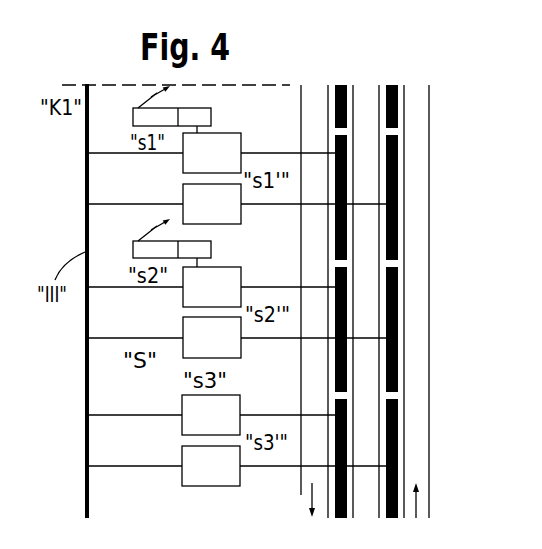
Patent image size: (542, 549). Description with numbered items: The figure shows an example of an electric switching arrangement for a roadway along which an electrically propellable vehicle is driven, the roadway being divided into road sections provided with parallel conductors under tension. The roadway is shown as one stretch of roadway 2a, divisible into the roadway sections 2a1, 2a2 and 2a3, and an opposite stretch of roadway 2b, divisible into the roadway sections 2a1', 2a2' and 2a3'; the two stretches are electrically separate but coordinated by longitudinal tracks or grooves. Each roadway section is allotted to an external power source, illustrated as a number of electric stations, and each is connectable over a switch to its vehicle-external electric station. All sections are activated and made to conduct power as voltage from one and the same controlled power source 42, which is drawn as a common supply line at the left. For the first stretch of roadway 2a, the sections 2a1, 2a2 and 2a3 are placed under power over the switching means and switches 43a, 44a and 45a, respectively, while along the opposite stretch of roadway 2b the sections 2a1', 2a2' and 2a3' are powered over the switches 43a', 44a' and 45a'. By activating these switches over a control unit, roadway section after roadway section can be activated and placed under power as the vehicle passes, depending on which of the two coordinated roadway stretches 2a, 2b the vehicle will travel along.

The stretch of roadway 2a is at (340, 85).
The roadway section 2a1 is at (297, 182).
The roadway section 2a2 is at (297, 314).
The roadway section 2a3 is at (297, 444).
The opposite stretch of roadway 2b is at (398, 108).
The roadway section 2a1' is at (444, 197).
The roadway section 2a2' is at (443, 329).
The roadway section 2a3' is at (440, 458).
The controlled power source 42 is at (85, 222).
The switching means 43a is at (211, 157).
The switching means 43a' is at (236, 203).
The switching means 44a is at (211, 291).
The switching means 44a' is at (236, 336).
The switching means 45a is at (211, 408).
The switching means 45a' is at (236, 459).